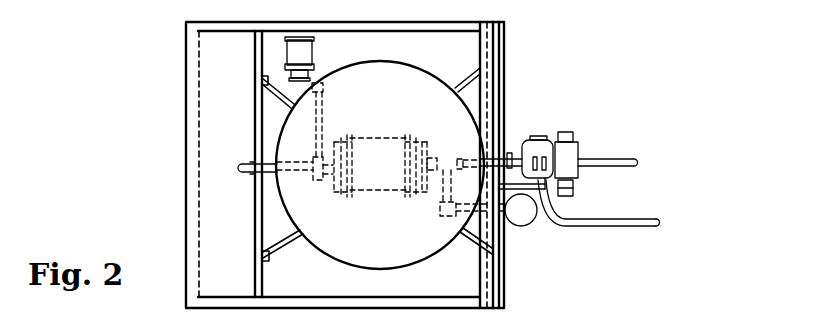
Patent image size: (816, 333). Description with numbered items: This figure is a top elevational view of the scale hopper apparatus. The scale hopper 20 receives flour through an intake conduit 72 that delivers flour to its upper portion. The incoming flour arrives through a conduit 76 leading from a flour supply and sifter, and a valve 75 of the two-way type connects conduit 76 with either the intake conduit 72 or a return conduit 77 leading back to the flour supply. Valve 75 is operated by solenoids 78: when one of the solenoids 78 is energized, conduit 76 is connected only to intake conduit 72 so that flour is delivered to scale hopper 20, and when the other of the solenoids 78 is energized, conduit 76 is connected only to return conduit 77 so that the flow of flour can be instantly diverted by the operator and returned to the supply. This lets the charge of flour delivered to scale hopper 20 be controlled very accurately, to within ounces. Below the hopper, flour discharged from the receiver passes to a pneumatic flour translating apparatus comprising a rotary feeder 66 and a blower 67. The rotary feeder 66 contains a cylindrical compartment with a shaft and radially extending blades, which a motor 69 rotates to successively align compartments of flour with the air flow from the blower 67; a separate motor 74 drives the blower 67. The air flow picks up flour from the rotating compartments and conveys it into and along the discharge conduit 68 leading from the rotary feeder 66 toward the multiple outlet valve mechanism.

The scale hopper 20 is at (320, 258).
The rotary feeder 66 is at (377, 137).
The blower 67 is at (511, 222).
The conduit 68 is at (247, 174).
The motor 69 is at (290, 56).
The intake conduit 72 is at (510, 152).
The motor 74 is at (539, 136).
The valve 75 is at (578, 148).
The conduit 76 is at (616, 158).
The return conduit 77 is at (633, 218).
The solenoids 78 is at (566, 132).